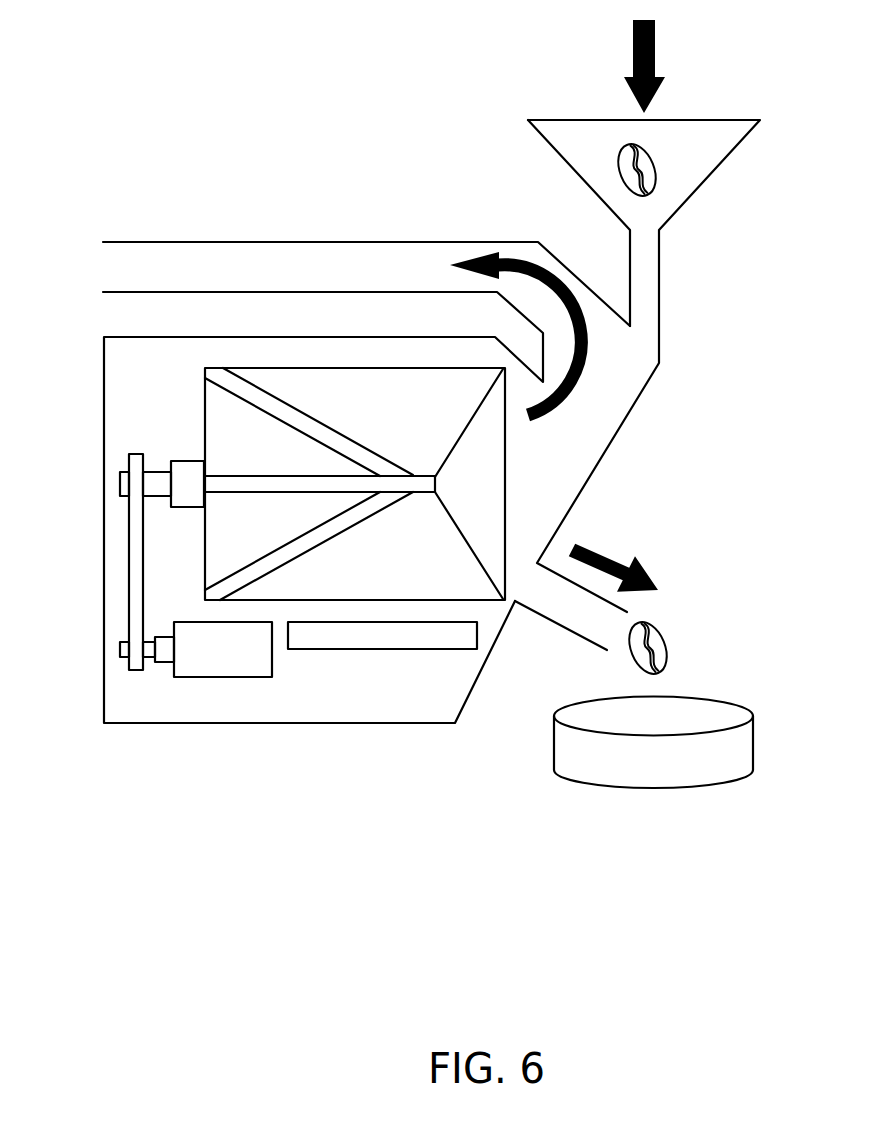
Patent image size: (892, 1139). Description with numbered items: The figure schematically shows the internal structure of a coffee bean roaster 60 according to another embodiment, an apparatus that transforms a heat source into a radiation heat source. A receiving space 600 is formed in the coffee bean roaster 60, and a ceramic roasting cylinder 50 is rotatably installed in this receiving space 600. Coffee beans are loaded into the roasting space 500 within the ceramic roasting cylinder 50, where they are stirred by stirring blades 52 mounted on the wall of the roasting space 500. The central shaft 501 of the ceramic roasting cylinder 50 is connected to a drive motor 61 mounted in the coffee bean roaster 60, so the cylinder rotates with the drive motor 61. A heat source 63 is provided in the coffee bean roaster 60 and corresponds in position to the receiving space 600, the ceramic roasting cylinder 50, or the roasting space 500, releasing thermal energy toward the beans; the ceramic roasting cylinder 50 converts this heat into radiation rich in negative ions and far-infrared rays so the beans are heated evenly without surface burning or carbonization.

The coffee bean roaster 60 is at (747, 277).
The receiving space 600 is at (347, 360).
The ceramic roasting cylinder 50 is at (385, 383).
The central shaft 501 is at (260, 485).
The stirring blades 52 is at (333, 440).
The roasting space 500 is at (376, 565).
The drive motor 61 is at (225, 662).
The heat source 63 is at (410, 637).